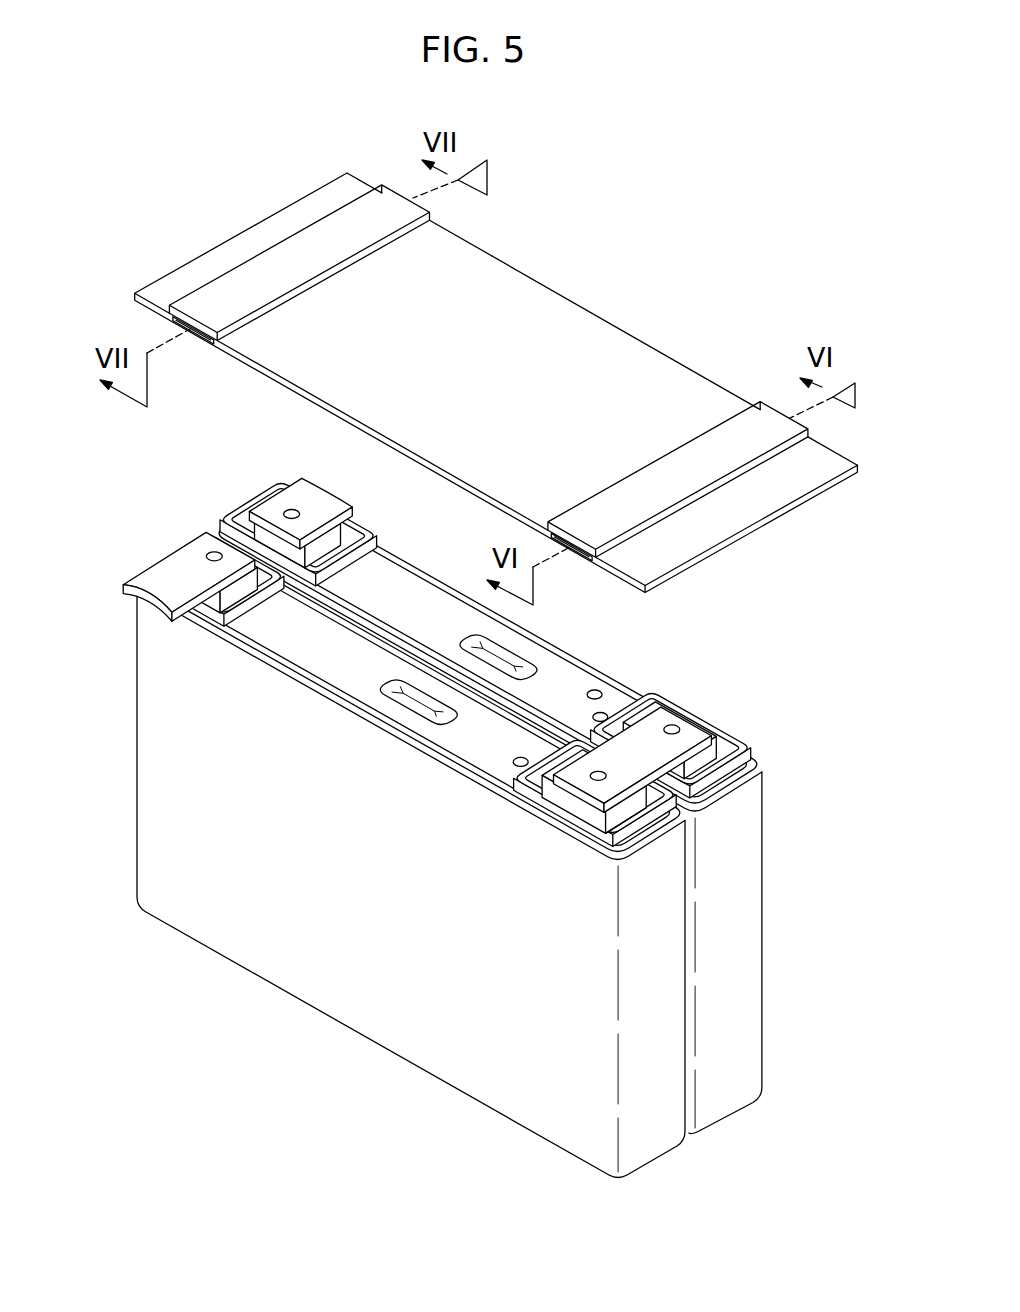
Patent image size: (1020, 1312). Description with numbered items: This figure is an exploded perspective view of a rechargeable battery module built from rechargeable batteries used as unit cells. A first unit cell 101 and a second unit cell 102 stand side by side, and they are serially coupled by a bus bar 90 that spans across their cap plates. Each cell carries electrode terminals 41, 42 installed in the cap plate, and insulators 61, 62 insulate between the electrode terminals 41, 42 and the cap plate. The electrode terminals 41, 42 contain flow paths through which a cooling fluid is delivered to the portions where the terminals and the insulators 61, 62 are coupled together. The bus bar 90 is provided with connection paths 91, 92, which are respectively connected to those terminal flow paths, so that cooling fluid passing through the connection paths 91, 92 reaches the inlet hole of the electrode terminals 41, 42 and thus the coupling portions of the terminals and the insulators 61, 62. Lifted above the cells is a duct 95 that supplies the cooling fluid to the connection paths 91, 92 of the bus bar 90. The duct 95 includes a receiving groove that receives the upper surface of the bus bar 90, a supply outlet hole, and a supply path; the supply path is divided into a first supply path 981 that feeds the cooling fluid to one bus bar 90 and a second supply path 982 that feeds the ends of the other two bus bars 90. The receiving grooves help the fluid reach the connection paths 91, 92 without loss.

The electrode terminal 41 is at (272, 577).
The electrode terminal 42 is at (238, 508).
The insulator 61 is at (700, 754).
The insulator 62 is at (640, 826).
The bus bar 90 is at (712, 772).
The connection path 91 is at (207, 553).
The connection path 92 is at (285, 509).
The duct 95 is at (496, 402).
The first supply path 981 is at (586, 560).
The second supply path 982 is at (207, 344).
The first unit cell 101 is at (690, 1020).
The second unit cell 102 is at (775, 993).